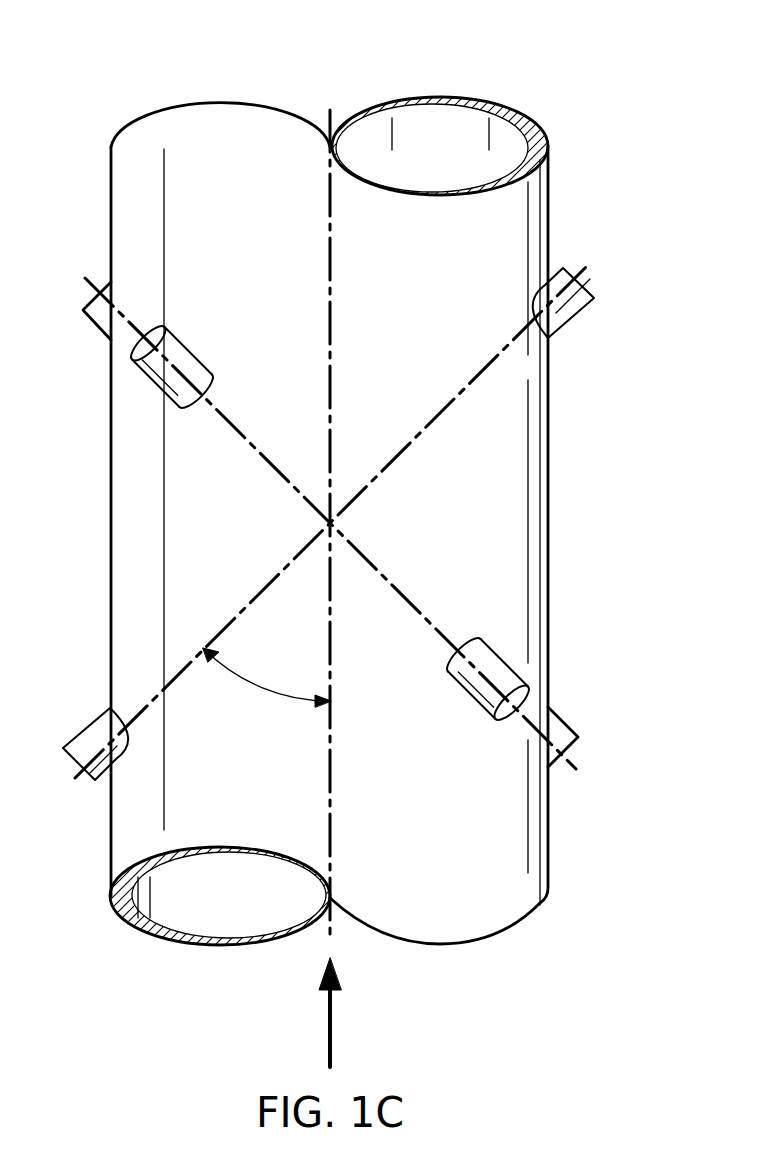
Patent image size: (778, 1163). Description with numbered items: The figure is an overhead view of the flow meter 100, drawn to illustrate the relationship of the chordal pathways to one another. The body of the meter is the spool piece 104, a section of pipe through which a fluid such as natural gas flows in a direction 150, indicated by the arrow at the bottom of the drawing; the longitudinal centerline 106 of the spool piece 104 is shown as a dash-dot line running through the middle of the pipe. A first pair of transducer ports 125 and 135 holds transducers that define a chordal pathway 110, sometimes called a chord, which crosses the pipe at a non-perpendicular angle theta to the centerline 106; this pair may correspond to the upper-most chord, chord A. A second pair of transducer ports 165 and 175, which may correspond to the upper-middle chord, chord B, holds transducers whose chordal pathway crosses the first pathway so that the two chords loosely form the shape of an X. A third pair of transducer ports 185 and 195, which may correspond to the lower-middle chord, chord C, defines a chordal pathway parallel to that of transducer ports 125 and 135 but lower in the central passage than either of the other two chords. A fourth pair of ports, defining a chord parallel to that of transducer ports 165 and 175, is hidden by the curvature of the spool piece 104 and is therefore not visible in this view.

The flow meter 100 is at (347, 537).
The spool piece 104 is at (549, 229).
The centerline 106 is at (333, 285).
The chordal pathway 110 is at (460, 397).
The transducer port 125 is at (193, 349).
The transducer port 135 is at (470, 697).
The flow direction 150 is at (332, 1020).
The transducer port 165 is at (90, 722).
The transducer port 175 is at (573, 322).
The transducer port 185 is at (93, 328).
The transducer port 195 is at (562, 718).